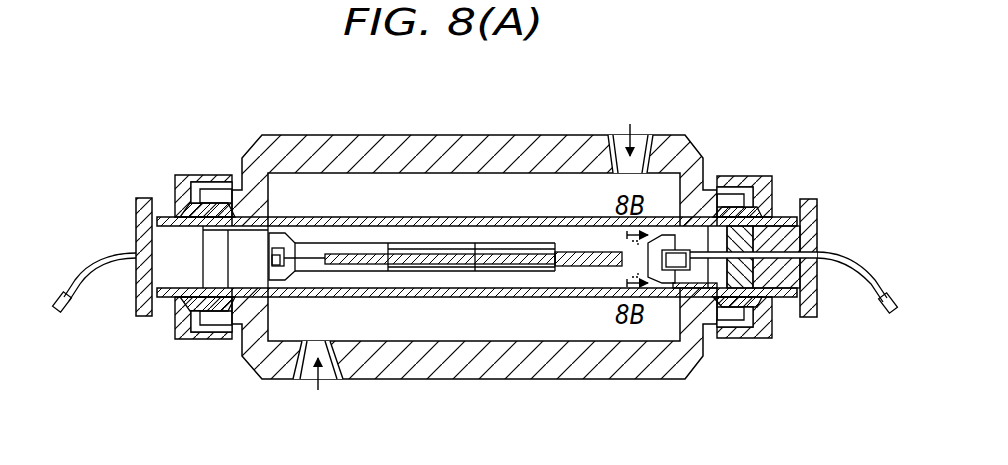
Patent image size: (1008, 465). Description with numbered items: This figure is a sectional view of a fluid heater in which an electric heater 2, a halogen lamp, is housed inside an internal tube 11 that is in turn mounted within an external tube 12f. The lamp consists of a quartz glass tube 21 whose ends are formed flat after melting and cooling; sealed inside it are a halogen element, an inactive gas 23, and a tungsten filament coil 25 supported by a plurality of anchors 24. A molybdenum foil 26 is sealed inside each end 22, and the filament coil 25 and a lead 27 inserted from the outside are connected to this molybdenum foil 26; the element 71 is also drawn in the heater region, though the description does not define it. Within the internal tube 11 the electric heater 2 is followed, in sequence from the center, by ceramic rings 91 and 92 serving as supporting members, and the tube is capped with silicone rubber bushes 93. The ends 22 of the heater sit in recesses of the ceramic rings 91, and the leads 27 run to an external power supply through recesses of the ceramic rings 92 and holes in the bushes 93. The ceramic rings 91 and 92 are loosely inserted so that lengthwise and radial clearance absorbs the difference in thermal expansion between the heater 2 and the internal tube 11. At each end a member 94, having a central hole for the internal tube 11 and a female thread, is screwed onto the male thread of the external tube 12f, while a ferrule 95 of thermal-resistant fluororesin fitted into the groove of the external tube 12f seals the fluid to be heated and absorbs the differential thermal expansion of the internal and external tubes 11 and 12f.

The electric heater 2 is at (469, 245).
The internal tube 11 is at (560, 298).
The external tube 12f is at (557, 134).
The quartz glass tube 21 is at (381, 242).
The end 22 is at (297, 275).
The inactive gas 23 is at (430, 248).
The anchors 24 is at (471, 248).
The tungsten filament coil 25 is at (493, 265).
The molybdenum foil 26 is at (278, 268).
The lead 27 is at (80, 273).
The heater element end 71 is at (525, 241).
The ceramic ring 91 is at (249, 280).
The ceramic ring 92 is at (210, 262).
The silicone rubber bush 93 is at (163, 242).
The member 94 is at (182, 176).
The ferrule 95 is at (201, 193).